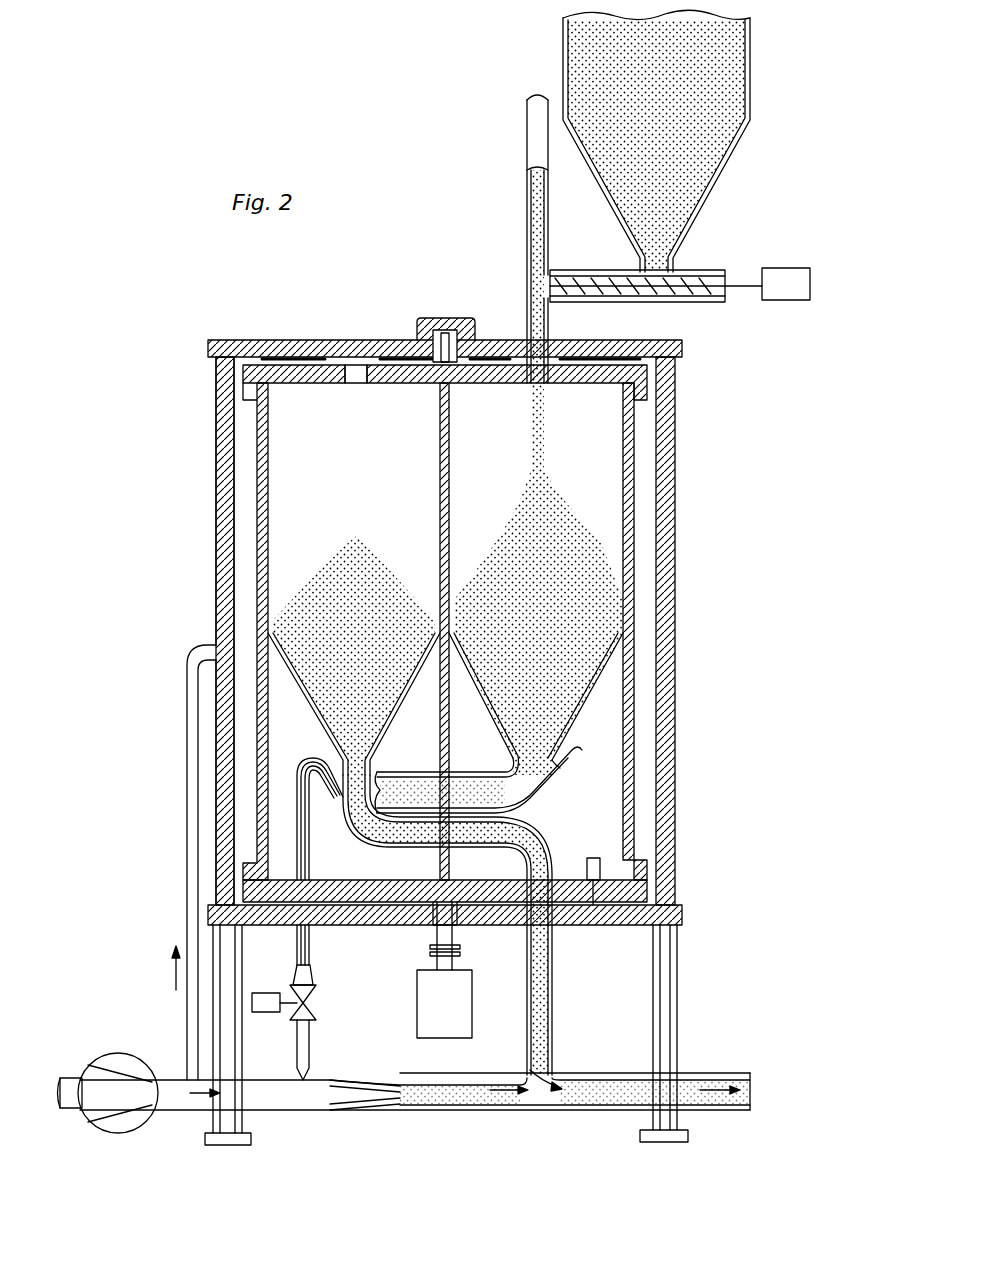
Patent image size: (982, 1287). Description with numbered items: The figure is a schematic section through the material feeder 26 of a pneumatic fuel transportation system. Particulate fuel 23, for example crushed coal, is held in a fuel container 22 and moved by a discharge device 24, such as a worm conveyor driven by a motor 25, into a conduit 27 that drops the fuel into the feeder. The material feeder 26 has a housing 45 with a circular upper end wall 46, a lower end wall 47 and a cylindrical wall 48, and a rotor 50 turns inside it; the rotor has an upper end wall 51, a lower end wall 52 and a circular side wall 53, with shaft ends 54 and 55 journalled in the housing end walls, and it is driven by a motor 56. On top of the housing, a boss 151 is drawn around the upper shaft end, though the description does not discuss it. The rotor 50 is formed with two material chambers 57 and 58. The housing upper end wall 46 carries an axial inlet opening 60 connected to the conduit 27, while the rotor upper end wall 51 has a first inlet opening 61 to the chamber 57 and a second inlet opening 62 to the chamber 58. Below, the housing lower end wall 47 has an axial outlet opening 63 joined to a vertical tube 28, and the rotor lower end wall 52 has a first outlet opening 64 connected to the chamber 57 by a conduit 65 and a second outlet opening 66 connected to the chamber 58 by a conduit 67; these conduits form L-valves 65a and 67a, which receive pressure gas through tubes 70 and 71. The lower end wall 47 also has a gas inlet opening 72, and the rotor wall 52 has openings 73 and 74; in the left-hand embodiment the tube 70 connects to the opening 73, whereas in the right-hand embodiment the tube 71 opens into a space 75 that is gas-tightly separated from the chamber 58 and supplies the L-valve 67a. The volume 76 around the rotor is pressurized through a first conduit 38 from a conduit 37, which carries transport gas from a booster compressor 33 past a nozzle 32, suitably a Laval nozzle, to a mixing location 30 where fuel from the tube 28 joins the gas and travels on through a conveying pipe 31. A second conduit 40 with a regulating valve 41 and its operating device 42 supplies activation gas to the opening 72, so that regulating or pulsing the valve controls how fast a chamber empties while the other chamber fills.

The fuel container 22 is at (752, 60).
The particulate fuel 23 is at (735, 100).
The discharge device 24 is at (680, 300).
The motor 25 is at (794, 268).
The material feeder 26 is at (735, 445).
The conduit 27 is at (527, 322).
The vertical tube 28 is at (552, 1010).
The mixing location 30 is at (422, 1112).
The conveying pipe 31 is at (680, 1110).
The nozzle 32 is at (378, 1110).
The booster compressor 33 is at (118, 1053).
The conduit 37 is at (280, 1110).
The first conduit 38 is at (186, 822).
The second conduit 40 is at (312, 975).
The regulating valve 41 is at (312, 1005).
The operating device 42 is at (272, 1012).
The housing 45 is at (210, 376).
The upper end wall 46 is at (298, 340).
The lower end wall 47 is at (688, 925).
The cylindrical wall 48 is at (676, 545).
The rotor 50 is at (218, 478).
The upper end wall 51 is at (238, 372).
The lower end wall 52 is at (290, 890).
The circular side wall 53 is at (640, 580).
The shaft end 54 is at (403, 365).
The shaft end 55 is at (432, 948).
The motor 56 is at (466, 1008).
The material chamber 57 is at (300, 436).
The material chamber 58 is at (605, 407).
The axial inlet opening 60 is at (550, 336).
The first inlet opening 61 is at (352, 365).
The second inlet opening 62 is at (548, 362).
The axial outlet opening 63 is at (558, 926).
The first outlet opening 64 is at (518, 908).
The conduit 65 is at (555, 836).
The L-valve 65a is at (383, 835).
The second outlet opening 66 is at (433, 915).
The conduit 67 is at (413, 790).
The L-valve 67a is at (510, 795).
The conduit 70 is at (330, 762).
The conduit 71 is at (575, 748).
The inlet opening 72 is at (312, 925).
The opening 73 is at (284, 925).
The opening 74 is at (600, 882).
The space 75 is at (585, 792).
The volume 76 is at (243, 588).
The shaft boss 151 is at (468, 318).